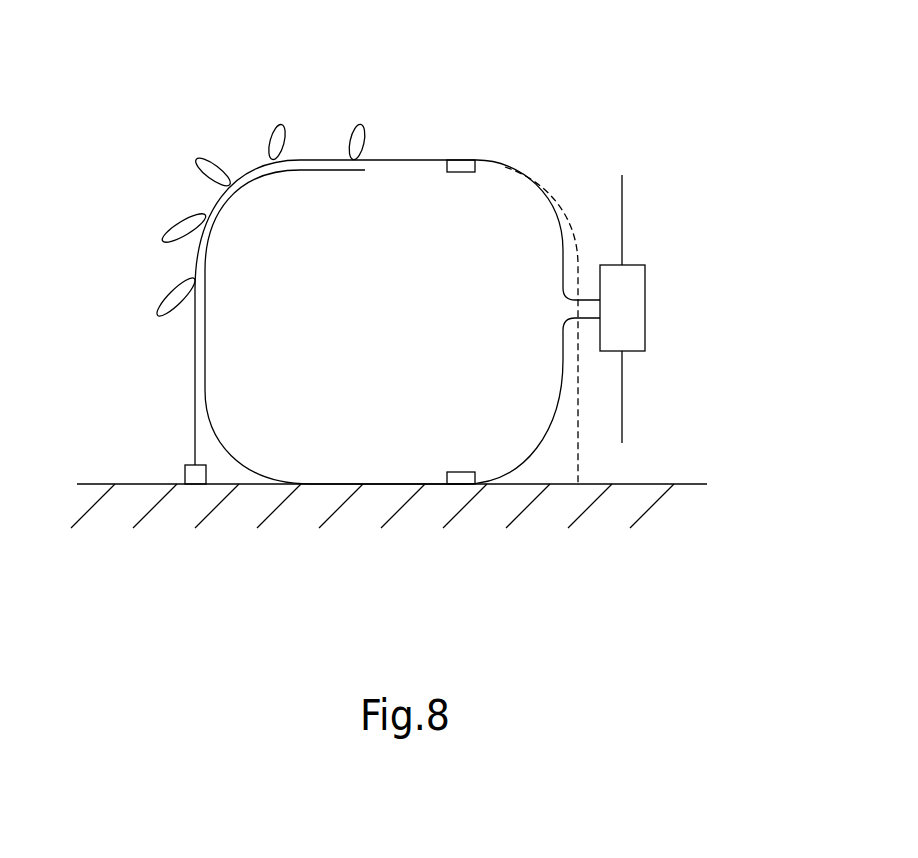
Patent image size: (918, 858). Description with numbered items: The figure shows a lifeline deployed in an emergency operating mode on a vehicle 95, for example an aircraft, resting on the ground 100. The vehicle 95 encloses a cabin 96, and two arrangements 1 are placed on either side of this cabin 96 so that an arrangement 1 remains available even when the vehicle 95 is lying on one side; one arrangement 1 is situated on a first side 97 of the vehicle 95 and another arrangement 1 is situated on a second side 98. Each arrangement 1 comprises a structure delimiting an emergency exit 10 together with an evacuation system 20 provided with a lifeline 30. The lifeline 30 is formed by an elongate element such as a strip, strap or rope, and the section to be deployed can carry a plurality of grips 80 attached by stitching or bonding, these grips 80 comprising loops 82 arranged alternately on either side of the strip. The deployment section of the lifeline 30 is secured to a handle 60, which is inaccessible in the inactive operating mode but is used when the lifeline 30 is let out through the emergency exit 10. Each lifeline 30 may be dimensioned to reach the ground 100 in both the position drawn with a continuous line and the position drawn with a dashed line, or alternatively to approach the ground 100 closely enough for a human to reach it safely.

The arrangement 1 is at (348, 207).
The emergency exit 10 is at (402, 185).
The evacuation system 20 is at (462, 185).
The lifeline 30 is at (195, 376).
The handle 60 is at (183, 484).
The grips 80 is at (197, 158).
The loops 82 is at (193, 237).
The vehicle 95 is at (660, 392).
The cabin 96 is at (416, 329).
The first side 97 is at (495, 157).
The second side 98 is at (380, 497).
The ground 100 is at (657, 484).